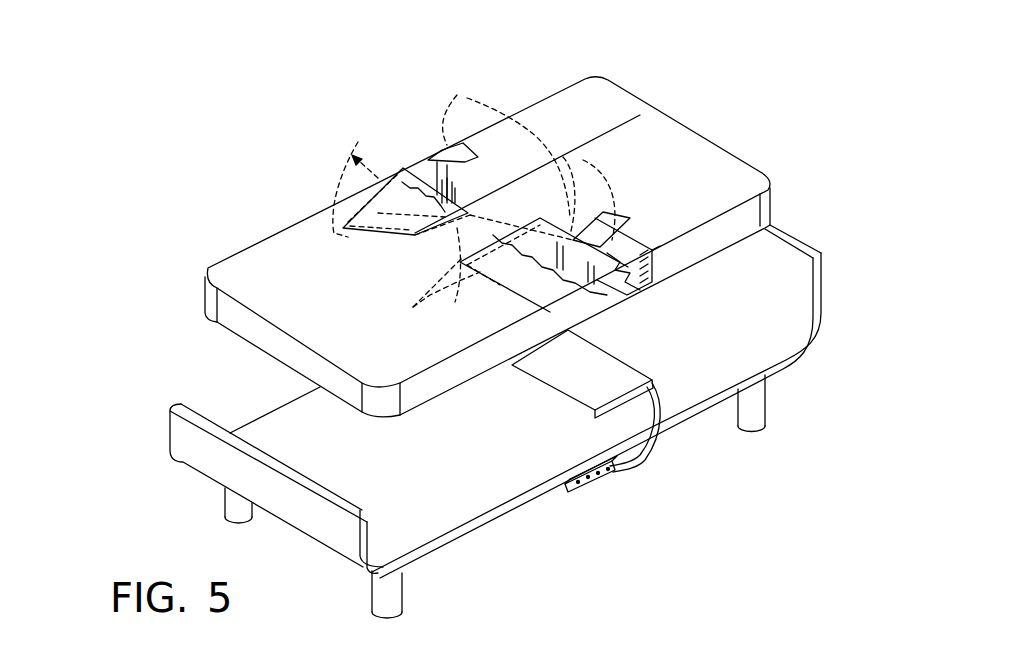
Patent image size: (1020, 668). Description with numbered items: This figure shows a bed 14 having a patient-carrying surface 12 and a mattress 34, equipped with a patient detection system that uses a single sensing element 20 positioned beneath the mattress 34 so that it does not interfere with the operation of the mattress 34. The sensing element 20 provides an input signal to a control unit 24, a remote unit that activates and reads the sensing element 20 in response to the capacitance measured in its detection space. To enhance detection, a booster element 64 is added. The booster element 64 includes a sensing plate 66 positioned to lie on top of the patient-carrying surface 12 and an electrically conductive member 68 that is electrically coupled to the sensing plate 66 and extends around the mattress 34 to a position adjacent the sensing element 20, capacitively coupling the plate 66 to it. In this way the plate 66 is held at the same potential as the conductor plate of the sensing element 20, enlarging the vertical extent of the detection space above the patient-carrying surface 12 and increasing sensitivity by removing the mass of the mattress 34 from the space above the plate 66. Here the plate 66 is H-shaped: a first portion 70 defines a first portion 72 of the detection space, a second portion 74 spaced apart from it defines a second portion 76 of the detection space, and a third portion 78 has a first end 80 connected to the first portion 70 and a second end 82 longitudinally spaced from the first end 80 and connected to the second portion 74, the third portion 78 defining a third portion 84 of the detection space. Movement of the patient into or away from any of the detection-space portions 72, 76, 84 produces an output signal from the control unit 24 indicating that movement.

The patient-carrying surface 12 is at (292, 236).
The bed 14 is at (787, 147).
The first sensing element 20 is at (586, 390).
The control unit 24 is at (585, 485).
The mattress 34 is at (640, 121).
The booster element 64 is at (690, 261).
The sensing plate 66 is at (372, 242).
The electrically conductive member 68 is at (636, 288).
The first portion of plate 70 is at (620, 217).
The first portion of detection space 72 is at (597, 165).
The second portion of plate 74 is at (443, 276).
The second portion of detection space 76 is at (358, 142).
The third portion of plate 78 is at (507, 272).
The first end of third portion 80 is at (500, 217).
The second end of third portion 82 is at (458, 240).
The third portion of detection space 84 is at (548, 150).